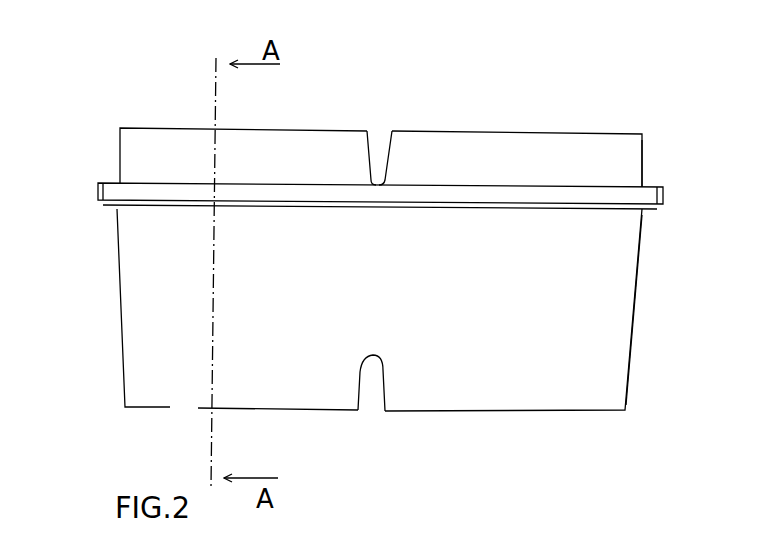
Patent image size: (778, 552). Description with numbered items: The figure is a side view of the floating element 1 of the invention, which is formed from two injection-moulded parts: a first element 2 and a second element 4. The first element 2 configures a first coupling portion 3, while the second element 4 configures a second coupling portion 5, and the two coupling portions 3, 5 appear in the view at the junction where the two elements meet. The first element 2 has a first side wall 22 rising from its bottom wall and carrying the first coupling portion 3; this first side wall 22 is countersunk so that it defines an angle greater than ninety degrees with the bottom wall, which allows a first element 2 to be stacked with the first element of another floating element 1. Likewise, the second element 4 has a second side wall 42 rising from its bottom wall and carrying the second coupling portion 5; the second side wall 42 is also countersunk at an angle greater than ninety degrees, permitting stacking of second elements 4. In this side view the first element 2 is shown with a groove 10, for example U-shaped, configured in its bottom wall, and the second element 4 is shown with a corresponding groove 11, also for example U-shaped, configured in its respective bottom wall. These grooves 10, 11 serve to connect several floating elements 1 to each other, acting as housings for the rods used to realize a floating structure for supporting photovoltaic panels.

The floating element 1 is at (590, 88).
The first element 2 is at (483, 414).
The first coupling portion 3 is at (104, 206).
The second element 4 is at (487, 128).
The second coupling portion 5 is at (129, 188).
The groove 10 is at (374, 400).
The groove 11 is at (390, 132).
The first side wall 22 is at (600, 360).
The second side wall 42 is at (625, 150).